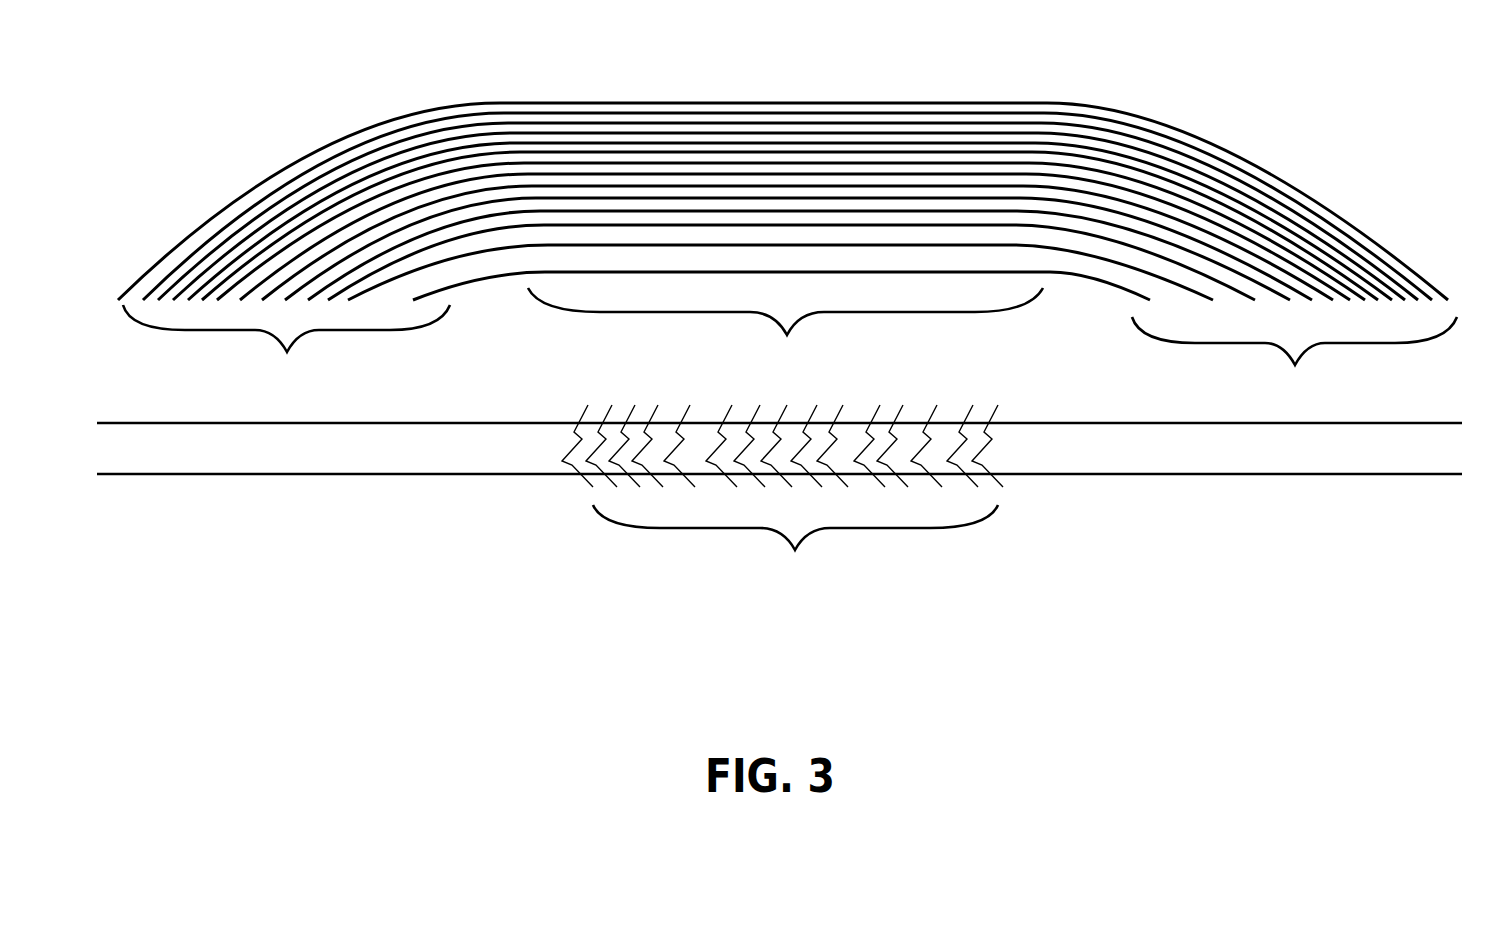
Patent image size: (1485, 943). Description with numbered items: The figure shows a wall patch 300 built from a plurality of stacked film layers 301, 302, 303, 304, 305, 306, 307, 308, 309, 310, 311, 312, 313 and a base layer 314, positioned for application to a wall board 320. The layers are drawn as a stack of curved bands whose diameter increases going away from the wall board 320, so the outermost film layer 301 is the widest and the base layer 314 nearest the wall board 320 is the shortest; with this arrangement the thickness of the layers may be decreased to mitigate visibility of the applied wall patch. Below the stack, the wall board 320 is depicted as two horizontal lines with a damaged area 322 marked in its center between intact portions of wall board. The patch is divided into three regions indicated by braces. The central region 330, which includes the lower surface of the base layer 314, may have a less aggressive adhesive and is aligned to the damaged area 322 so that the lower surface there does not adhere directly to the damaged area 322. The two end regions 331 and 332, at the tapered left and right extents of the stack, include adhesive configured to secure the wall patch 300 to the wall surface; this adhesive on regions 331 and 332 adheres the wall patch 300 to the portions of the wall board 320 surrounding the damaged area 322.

The wall patch 300 is at (1331, 141).
The film layer 301 is at (1043, 103).
The film layer 302 is at (985, 113).
The film layer 303 is at (938, 123).
The film layer 304 is at (900, 133).
The film layer 305 is at (857, 143).
The film layer 306 is at (813, 152).
The film layer 307 is at (760, 163).
The film layer 308 is at (723, 174).
The film layer 309 is at (680, 186).
The film layer 310 is at (647, 198).
The film layer 311 is at (605, 211).
The film layer 312 is at (570, 225).
The film layer 313 is at (548, 245).
The base layer 314 is at (580, 271).
The wall board 320 is at (323, 475).
The damaged area 322 is at (782, 495).
The region 330 is at (785, 328).
The region 331 is at (286, 345).
The region 332 is at (1294, 357).